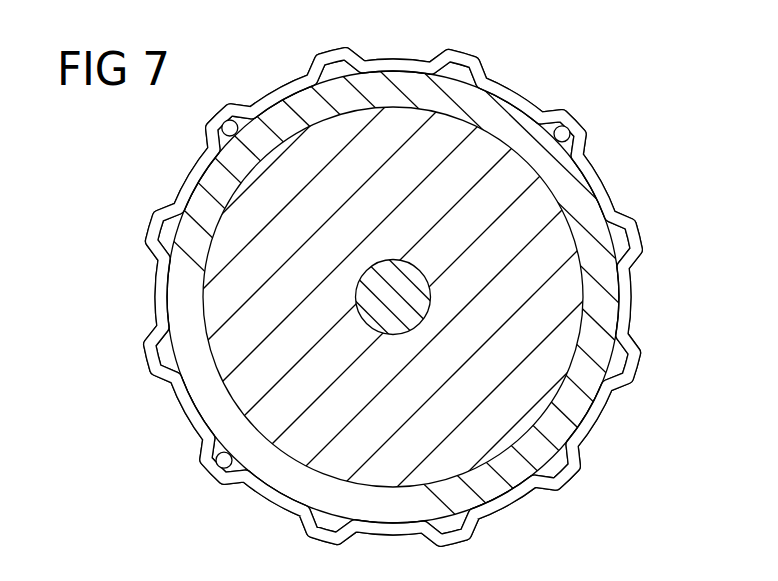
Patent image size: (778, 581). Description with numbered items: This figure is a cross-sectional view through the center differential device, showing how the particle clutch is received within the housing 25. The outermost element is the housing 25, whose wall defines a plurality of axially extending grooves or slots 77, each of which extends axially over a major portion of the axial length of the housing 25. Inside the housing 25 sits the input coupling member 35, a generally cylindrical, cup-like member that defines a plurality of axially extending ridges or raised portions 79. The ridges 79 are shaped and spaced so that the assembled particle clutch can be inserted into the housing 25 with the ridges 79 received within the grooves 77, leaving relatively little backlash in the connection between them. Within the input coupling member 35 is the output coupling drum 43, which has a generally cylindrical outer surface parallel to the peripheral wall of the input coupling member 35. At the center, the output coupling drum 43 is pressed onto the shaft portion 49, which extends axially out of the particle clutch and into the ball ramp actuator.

The housing 25 is at (186, 108).
The input coupling member 35 is at (452, 72).
The output coupling drum 43 is at (543, 400).
The shaft portion 49 is at (424, 297).
The grooves 77 is at (565, 149).
The ridges 79 is at (333, 76).